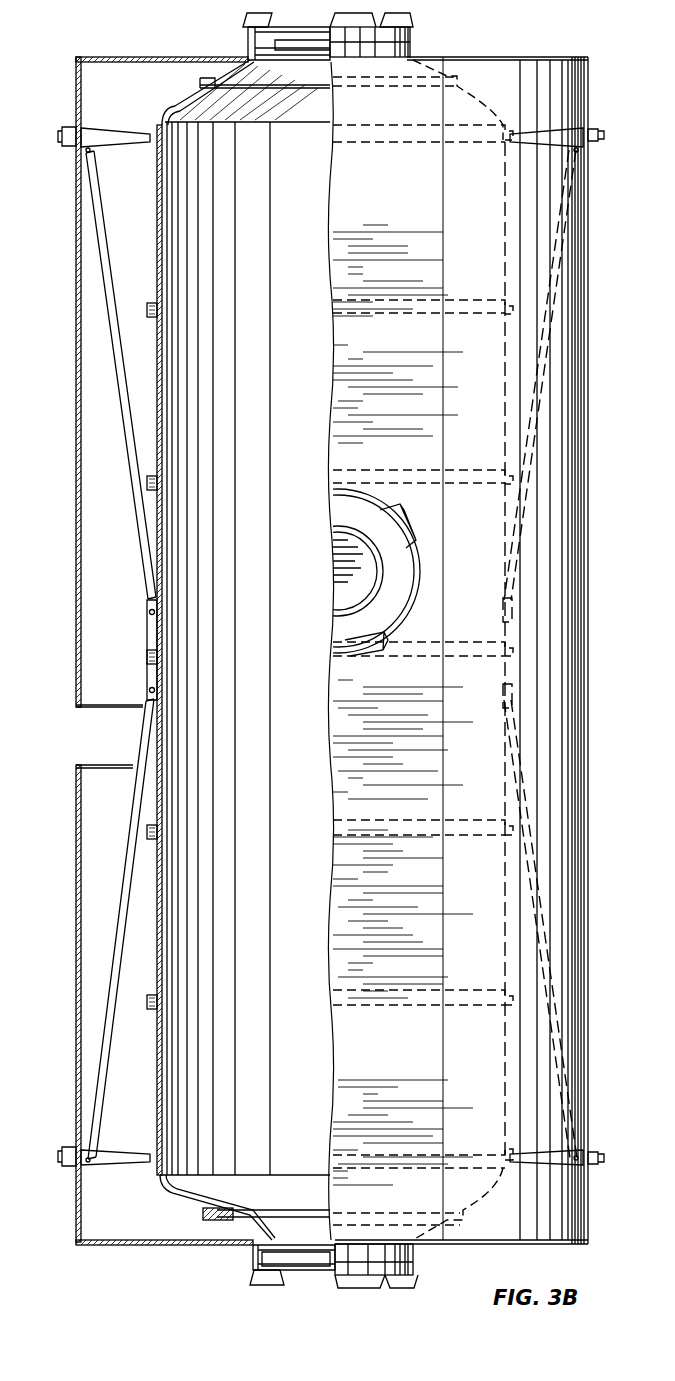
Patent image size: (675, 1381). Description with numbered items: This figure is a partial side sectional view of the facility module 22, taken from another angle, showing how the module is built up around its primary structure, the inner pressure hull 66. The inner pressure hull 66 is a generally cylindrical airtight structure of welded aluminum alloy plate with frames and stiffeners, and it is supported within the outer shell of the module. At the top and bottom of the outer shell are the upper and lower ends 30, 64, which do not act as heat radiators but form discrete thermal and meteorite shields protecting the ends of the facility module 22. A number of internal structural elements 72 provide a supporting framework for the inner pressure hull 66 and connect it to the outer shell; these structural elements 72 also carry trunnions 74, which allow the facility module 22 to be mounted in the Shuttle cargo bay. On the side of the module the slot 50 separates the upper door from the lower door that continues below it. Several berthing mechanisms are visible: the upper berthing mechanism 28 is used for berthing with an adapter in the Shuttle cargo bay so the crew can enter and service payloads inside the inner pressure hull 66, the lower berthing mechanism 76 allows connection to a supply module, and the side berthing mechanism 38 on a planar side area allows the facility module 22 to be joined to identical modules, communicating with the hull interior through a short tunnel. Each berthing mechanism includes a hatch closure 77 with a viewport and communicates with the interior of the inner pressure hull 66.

The facility module 22 is at (522, 46).
The upper berthing mechanism 28 is at (412, 25).
The upper end of the outer shell 30 is at (150, 58).
The berthing mechanism 38 is at (385, 600).
The slot 50 is at (88, 765).
The lower end of the outer shell 64 is at (140, 1246).
The inner pressure hull 66 is at (155, 225).
The internal structural elements 72 is at (108, 347).
The trunnions 74 is at (72, 132).
The lower berthing mechanism 76 is at (375, 1280).
The hatch closure 77 is at (300, 50).